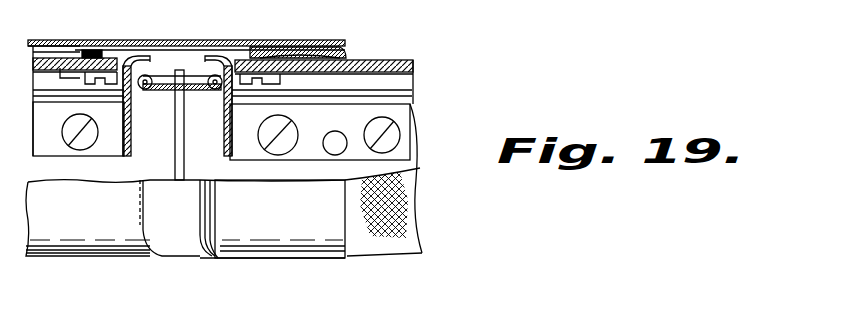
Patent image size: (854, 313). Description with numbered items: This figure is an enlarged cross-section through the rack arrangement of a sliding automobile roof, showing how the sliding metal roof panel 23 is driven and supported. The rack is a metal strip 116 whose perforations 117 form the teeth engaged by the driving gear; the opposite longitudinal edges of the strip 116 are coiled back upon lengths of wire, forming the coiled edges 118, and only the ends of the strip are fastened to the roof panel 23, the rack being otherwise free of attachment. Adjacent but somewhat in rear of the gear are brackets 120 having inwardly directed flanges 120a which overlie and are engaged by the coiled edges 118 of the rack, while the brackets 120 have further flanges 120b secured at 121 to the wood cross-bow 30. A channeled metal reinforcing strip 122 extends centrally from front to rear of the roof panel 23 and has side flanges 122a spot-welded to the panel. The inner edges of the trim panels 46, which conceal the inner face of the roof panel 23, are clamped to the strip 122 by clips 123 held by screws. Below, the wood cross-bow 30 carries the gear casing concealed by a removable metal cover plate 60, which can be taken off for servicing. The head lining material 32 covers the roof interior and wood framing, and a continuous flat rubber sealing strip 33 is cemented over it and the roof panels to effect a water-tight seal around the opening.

The sliding metal roof panel 23 is at (108, 40).
The perforations 117 is at (181, 76).
The inwardly directed flanges 120a is at (226, 66).
The channeled metal reinforcing strip 122 is at (268, 47).
The side flanges 122a is at (335, 58).
The trim panels 46 is at (400, 62).
The securing point of bracket flanges 121 is at (385, 128).
The brackets 120 is at (240, 122).
The flanges 120b is at (336, 135).
The clips 123 is at (88, 78).
The metal strip 116 is at (165, 88).
The coiled edges 118 is at (222, 92).
The rubber sealing strip 33 is at (174, 134).
The front cross-member or bow 30 is at (418, 168).
The head lining material 32 is at (405, 212).
The removable metal cover plate 60 is at (290, 258).